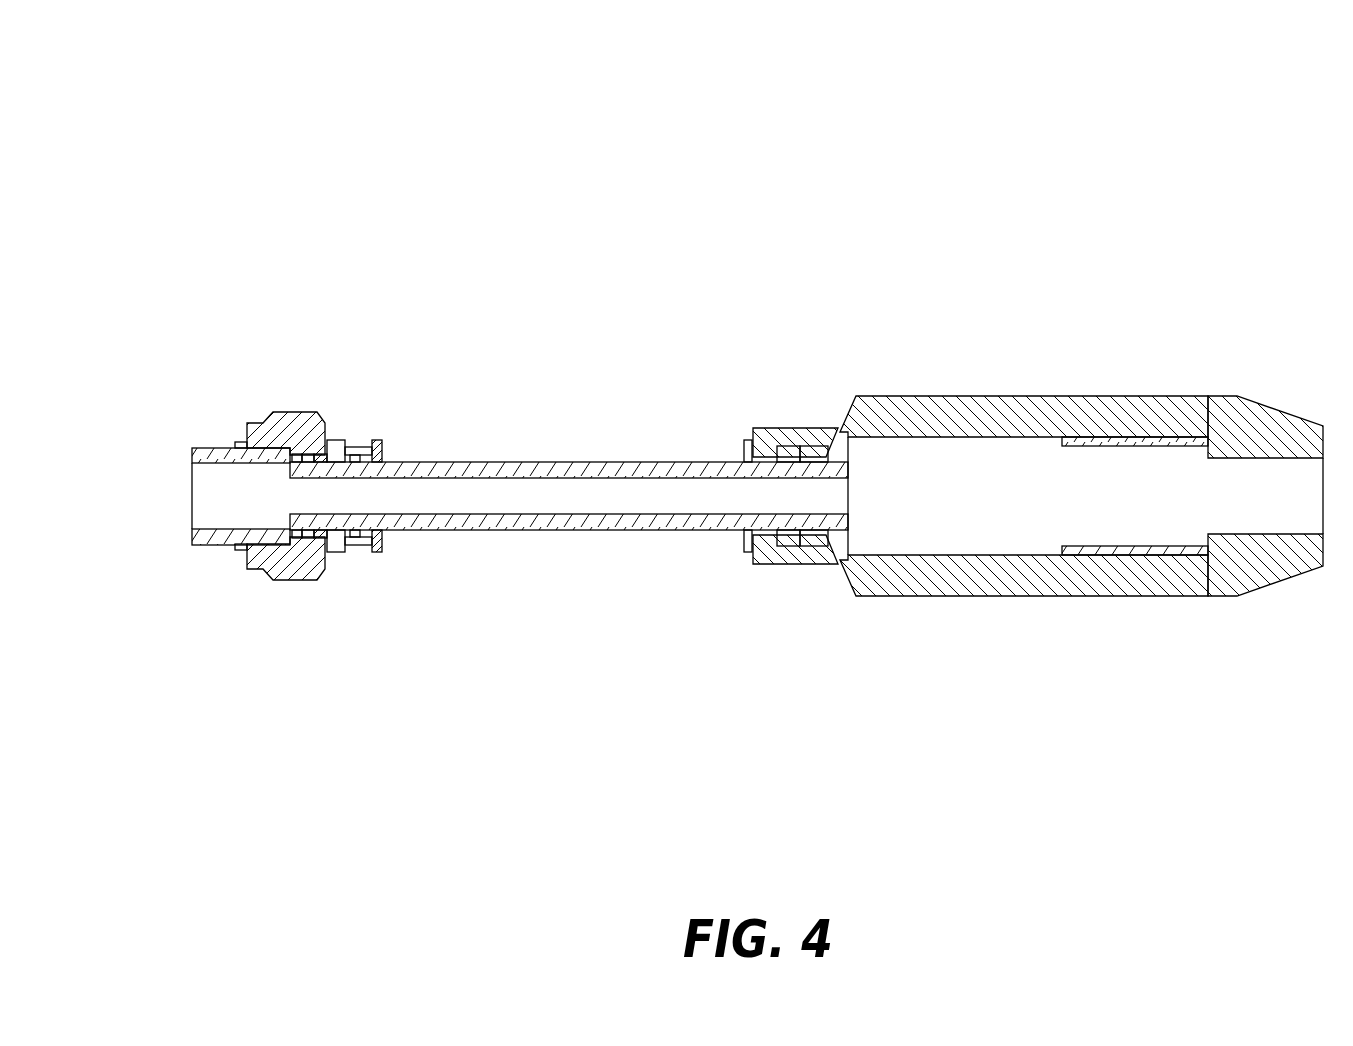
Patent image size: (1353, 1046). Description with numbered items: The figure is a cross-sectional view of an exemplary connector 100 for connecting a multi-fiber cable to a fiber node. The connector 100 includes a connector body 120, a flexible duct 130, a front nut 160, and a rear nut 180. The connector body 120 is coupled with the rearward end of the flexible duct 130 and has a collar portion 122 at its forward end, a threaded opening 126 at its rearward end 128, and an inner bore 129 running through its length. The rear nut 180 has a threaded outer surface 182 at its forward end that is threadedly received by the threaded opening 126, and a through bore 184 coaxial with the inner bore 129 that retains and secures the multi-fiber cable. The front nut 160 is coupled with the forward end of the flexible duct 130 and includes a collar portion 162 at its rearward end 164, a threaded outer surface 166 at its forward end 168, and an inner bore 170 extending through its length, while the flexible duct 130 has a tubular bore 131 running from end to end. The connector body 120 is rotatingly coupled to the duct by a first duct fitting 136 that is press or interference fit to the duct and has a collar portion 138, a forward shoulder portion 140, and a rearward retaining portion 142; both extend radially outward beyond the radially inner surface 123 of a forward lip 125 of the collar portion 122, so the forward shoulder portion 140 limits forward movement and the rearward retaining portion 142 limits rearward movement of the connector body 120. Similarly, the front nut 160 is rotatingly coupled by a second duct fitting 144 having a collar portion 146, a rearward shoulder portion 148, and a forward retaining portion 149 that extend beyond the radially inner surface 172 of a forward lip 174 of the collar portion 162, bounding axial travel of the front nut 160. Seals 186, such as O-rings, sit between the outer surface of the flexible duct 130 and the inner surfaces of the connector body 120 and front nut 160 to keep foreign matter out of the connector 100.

The connector 100 is at (1137, 120).
The connector body 120 is at (975, 396).
The collar portion 122 is at (780, 446).
The radially inner surface 123 is at (758, 482).
The forward lip 125 is at (757, 560).
The threaded opening 126 is at (1125, 542).
The rearward end 128 is at (1081, 458).
The inner bore 129 is at (975, 525).
The flexible duct 130 is at (645, 463).
The tubular bore 131 is at (556, 500).
The first duct fitting 136 is at (748, 440).
The collar portion 138 is at (808, 430).
The forward shoulder portion 140 is at (745, 552).
The rearward retaining portion 142 is at (783, 556).
The second duct fitting 144 is at (392, 447).
The collar portion 146 is at (330, 581).
The rearward shoulder portion 148 is at (380, 551).
The forward retaining portion 149 is at (333, 447).
The front nut 160 is at (290, 412).
The collar portion 162 is at (352, 565).
The rearward end 164 is at (373, 585).
The threaded outer surface 166 is at (203, 448).
The forward end 168 is at (189, 478).
The inner bore 170 is at (228, 507).
The radially inner surface 172 is at (363, 532).
The forward lip 174 is at (357, 452).
The rear nut 180 is at (1270, 588).
The threaded outer surface 182 is at (1080, 426).
The through bore 184 is at (1255, 495).
The seals 186 is at (298, 550).